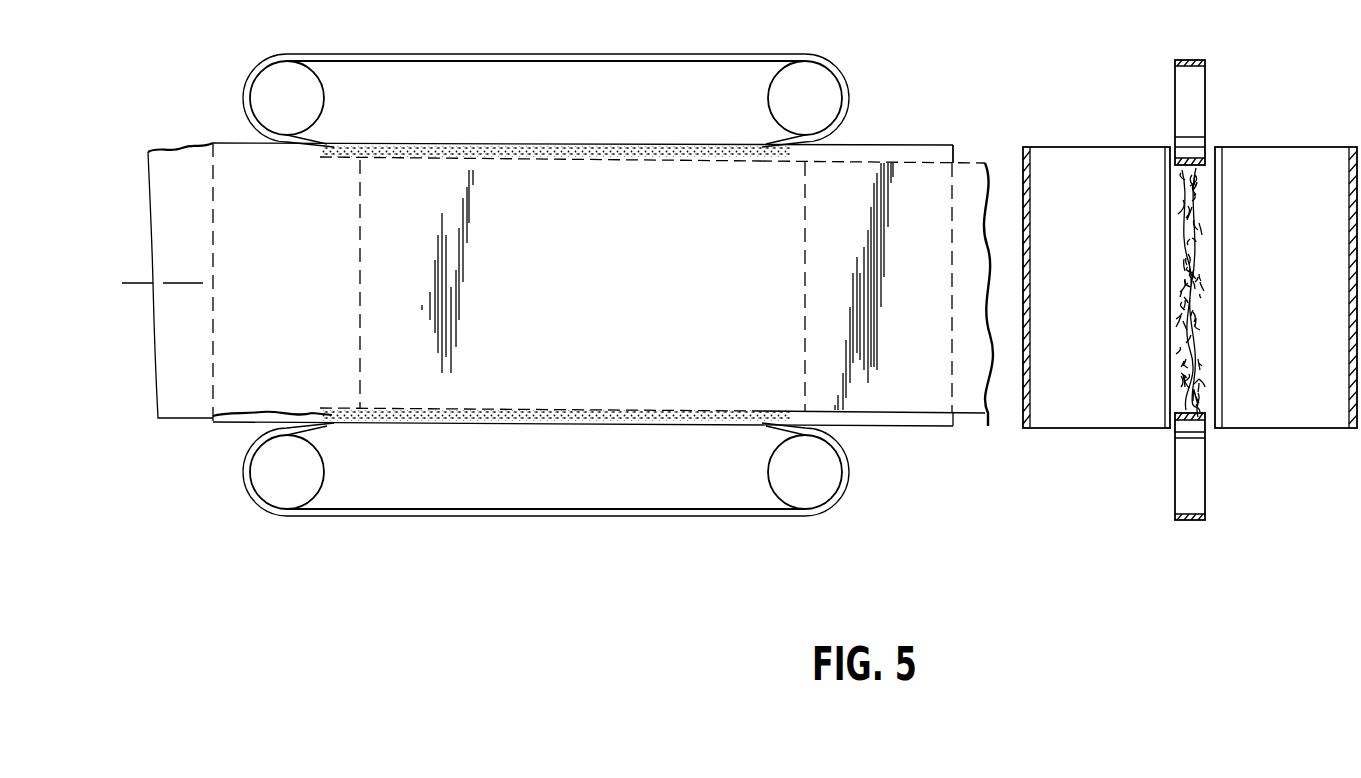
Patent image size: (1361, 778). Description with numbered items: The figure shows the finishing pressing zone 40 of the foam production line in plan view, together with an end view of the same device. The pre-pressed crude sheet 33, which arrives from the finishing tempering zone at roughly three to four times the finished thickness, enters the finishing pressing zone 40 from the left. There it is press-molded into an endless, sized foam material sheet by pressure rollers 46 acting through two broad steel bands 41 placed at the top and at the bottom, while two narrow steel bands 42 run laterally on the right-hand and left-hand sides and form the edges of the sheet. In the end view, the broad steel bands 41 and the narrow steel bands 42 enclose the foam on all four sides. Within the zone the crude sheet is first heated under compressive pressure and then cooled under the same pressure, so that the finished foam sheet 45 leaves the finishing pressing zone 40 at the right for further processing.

In FIG. 5, the crude sheet 33 is at (180, 393).
In FIG. 5, the finishing pressing zone 40 is at (703, 73).
In FIG. 5, the narrow steel bands 42 is at (545, 59).
In FIG. 5a, the narrow steel bands 42 is at (1195, 62).
In FIG. 5, the finished foam sheet 45 is at (973, 190).
In FIG. 5a, the finished foam sheet 45 is at (1175, 332).
In FIG. 5, the pressure rollers 46 is at (513, 145).
In FIG. 5a, the broad steel bands 41 is at (1352, 165).